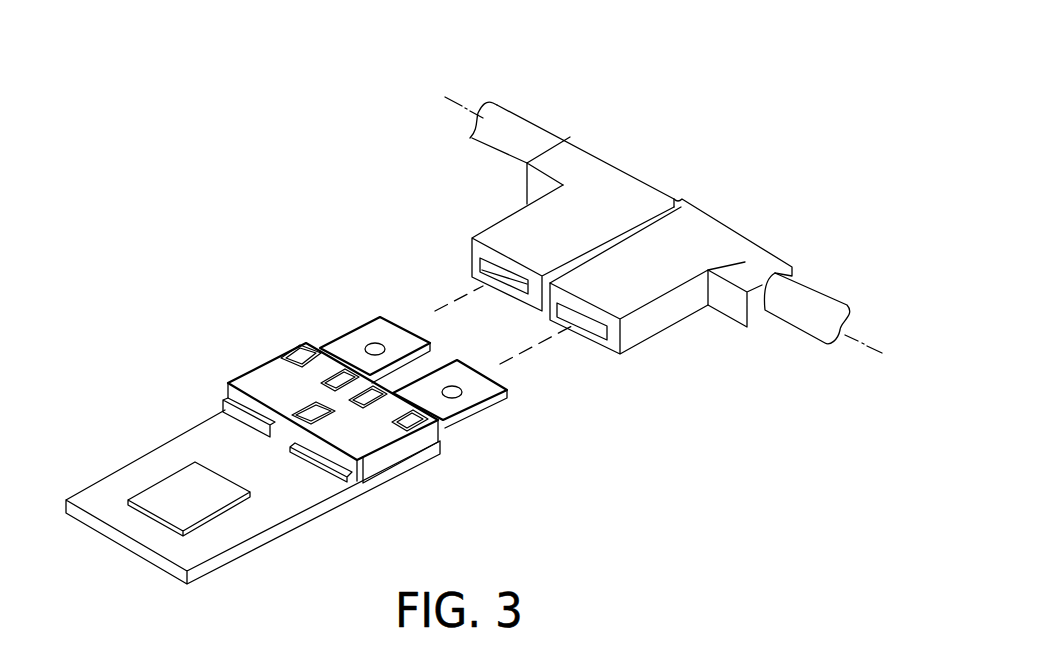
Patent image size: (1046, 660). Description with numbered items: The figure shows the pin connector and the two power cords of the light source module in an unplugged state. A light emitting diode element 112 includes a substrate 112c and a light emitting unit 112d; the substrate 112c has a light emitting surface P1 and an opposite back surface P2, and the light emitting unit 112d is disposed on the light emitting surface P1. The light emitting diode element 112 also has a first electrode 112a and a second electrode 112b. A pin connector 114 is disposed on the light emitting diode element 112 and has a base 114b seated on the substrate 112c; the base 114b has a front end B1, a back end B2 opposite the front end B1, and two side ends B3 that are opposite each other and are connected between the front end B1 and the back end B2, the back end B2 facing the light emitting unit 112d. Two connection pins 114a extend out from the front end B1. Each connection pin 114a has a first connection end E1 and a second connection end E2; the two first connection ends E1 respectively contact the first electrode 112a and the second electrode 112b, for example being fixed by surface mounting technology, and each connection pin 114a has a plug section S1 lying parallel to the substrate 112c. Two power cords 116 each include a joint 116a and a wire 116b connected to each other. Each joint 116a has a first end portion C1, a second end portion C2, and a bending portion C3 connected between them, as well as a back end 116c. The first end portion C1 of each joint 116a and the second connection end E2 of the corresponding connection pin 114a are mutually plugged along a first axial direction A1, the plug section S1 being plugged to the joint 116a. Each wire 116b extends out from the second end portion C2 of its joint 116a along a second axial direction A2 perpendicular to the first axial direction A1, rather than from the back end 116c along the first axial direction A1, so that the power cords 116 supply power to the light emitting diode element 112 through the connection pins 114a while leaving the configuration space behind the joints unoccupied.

The light emitting diode element 112 is at (122, 416).
The first electrode 112a is at (292, 428).
The second electrode 112b is at (305, 445).
The substrate 112c is at (248, 517).
The light emitting unit 112d is at (192, 508).
The pin connector 114 is at (425, 472).
The connection pin 114a is at (435, 383).
The base 114b is at (363, 447).
The power cord 116 is at (659, 243).
The joint 116a is at (583, 163).
The wire 116b is at (518, 127).
The back end 116c is at (652, 183).
The first axial direction A1 is at (548, 343).
The second axial direction A2 is at (850, 337).
The front end B1 is at (354, 413).
The back end B2 is at (288, 432).
The side end B3 is at (283, 348).
The first end portion C1 is at (617, 298).
The second end portion C2 is at (700, 297).
The bending portion C3 is at (685, 237).
The first connection end E1 is at (255, 409).
The second connection end E2 is at (478, 372).
The light emitting surface P1 is at (122, 470).
The back surface P2 is at (145, 567).
The plug section S1 is at (470, 421).